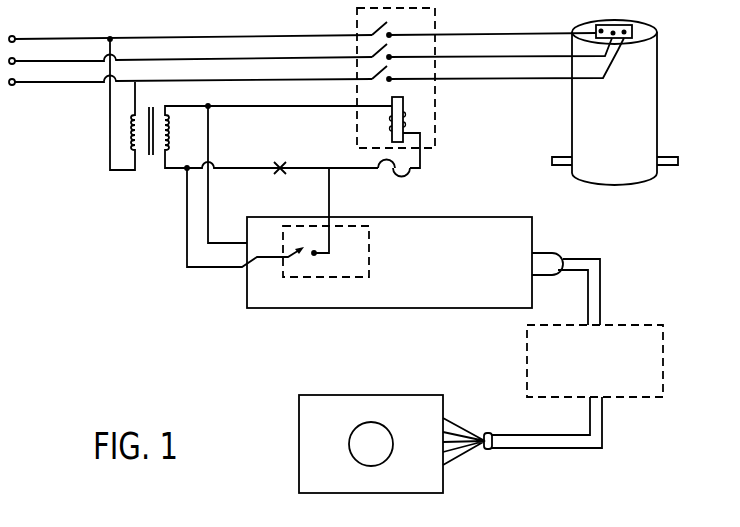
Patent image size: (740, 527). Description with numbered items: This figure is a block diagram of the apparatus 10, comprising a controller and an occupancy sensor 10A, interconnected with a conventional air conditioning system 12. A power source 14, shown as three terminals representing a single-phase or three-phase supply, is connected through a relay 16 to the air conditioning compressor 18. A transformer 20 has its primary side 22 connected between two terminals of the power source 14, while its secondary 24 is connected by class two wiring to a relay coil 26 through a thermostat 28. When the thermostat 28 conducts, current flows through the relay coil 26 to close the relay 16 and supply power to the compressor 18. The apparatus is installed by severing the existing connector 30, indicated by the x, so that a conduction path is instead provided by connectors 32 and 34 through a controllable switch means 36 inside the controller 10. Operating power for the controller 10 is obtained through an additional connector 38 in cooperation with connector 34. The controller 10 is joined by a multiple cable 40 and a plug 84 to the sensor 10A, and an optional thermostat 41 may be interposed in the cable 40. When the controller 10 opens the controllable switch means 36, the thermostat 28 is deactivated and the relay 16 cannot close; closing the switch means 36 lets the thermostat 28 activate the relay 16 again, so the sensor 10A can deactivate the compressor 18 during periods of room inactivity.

The power source 14 is at (22, 14).
The air conditioning system 12 is at (176, 25).
The relay 16 is at (436, 24).
The air conditioning compressor 18 is at (657, 106).
The relay coil 26 is at (405, 123).
The thermostat 28 is at (413, 170).
The secondary 24 is at (172, 118).
The primary side 22 is at (125, 172).
The transformer 20 is at (148, 172).
The connector 30 is at (224, 170).
The additional connector 38 is at (211, 214).
The connector 32 is at (329, 192).
The controller 10 is at (478, 217).
The plug 84 is at (556, 253).
The connector 34 is at (213, 268).
The controllable switch means 36 is at (315, 256).
The optional thermostat 41 is at (612, 325).
The sensor 10A is at (370, 395).
The multiple cable 40 is at (603, 422).